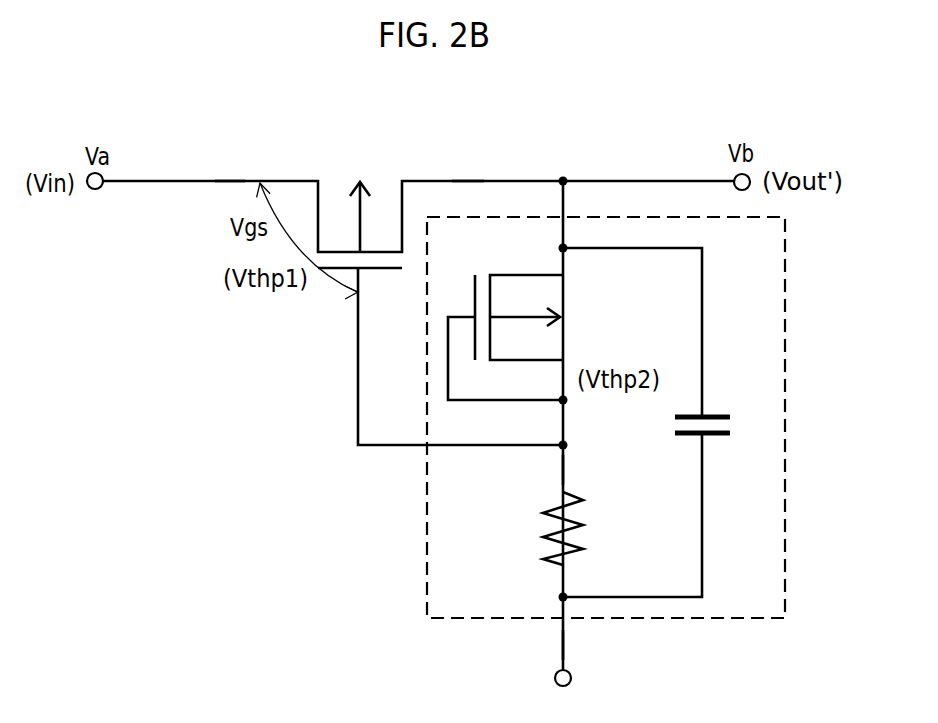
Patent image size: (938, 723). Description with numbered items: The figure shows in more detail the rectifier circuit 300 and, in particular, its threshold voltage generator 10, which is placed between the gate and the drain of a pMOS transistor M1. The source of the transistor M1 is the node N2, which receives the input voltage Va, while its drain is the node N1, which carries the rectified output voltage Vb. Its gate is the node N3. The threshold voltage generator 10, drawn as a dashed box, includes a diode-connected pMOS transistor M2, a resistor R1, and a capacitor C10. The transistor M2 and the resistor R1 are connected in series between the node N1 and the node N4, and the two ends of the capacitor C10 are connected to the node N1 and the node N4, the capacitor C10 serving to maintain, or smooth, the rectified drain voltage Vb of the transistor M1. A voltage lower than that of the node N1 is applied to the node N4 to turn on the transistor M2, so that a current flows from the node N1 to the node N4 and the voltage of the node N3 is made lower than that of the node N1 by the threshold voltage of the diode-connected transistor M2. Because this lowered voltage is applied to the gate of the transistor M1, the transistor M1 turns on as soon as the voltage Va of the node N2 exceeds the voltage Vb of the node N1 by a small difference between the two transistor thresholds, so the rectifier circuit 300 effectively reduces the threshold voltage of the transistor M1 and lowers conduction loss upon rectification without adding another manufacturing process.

The rectifier circuit 300 is at (750, 74).
The threshold voltage generator 10 is at (735, 620).
The pMOS transistor M1 is at (378, 178).
The diode-connected pMOS transistor M2 is at (565, 340).
The resistor R1 is at (540, 525).
The capacitor C10 is at (715, 445).
The node N1 is at (468, 176).
The node N2 is at (229, 176).
The node N3 is at (558, 470).
The node N4 is at (558, 645).